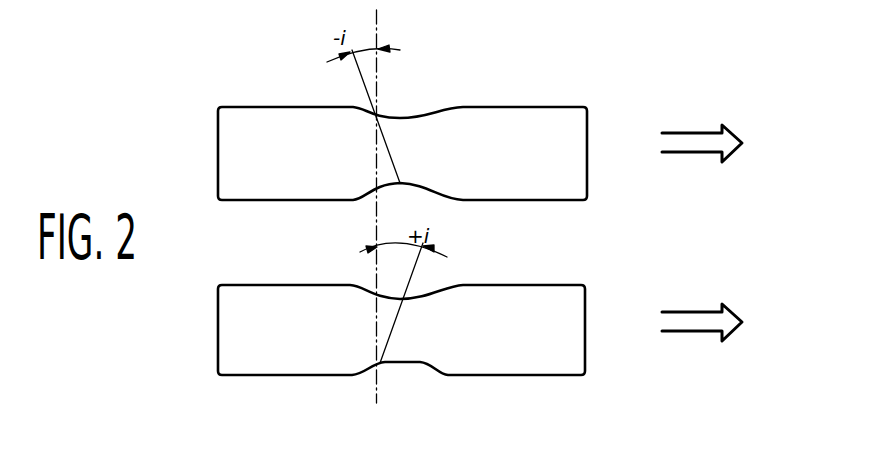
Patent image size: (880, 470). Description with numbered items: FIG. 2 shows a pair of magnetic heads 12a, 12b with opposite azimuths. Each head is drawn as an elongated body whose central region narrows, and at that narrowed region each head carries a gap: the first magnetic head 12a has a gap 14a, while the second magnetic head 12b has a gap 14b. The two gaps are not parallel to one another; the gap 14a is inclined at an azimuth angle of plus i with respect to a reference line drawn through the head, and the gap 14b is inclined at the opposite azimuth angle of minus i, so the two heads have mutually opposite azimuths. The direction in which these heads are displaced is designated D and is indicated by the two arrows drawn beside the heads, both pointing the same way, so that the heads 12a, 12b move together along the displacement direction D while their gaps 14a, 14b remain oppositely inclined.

The magnetic head 12a is at (218, 346).
The magnetic head 12b is at (217, 128).
The gap 14a is at (397, 327).
The gap 14b is at (390, 138).
The displacement direction D is at (703, 312).